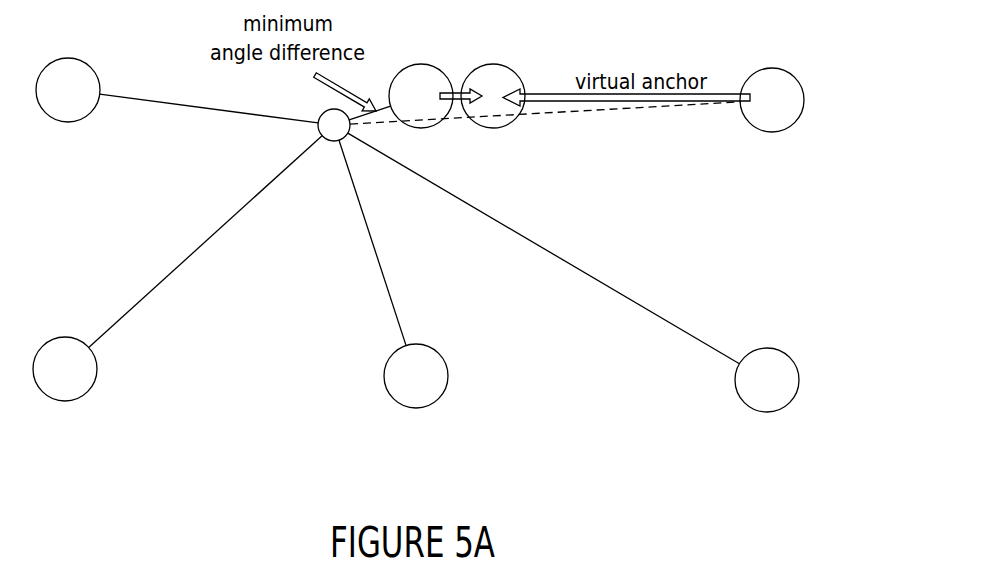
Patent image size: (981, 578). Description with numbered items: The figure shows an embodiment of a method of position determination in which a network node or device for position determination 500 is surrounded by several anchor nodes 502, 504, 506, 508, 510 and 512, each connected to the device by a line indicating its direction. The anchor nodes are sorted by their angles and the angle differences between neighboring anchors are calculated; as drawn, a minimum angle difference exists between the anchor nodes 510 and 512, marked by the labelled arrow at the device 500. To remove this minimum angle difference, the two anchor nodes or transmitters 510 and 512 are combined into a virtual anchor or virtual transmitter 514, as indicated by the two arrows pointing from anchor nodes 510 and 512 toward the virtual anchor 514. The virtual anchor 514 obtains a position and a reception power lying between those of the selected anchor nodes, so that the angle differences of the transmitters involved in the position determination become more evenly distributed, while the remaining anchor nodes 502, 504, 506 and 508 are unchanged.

The device for position determination 500 is at (330, 141).
The anchor node 502 is at (80, 121).
The anchor node 504 is at (77, 400).
The anchor node 506 is at (428, 407).
The anchor node 508 is at (779, 411).
The anchor node 510 is at (785, 131).
The anchor node 512 is at (432, 127).
The virtual anchor 514 is at (505, 127).